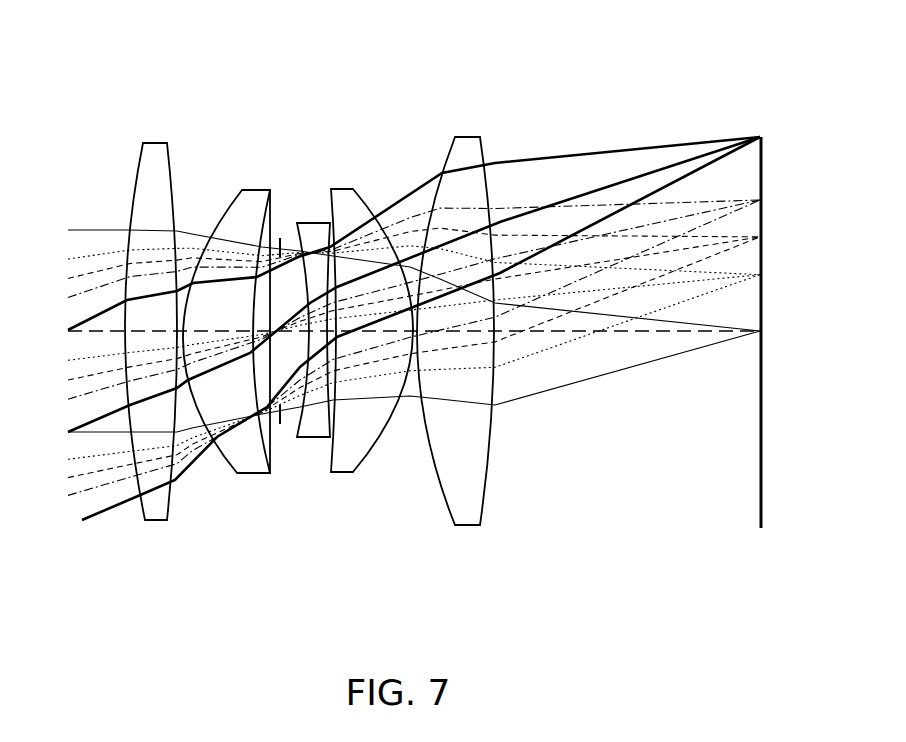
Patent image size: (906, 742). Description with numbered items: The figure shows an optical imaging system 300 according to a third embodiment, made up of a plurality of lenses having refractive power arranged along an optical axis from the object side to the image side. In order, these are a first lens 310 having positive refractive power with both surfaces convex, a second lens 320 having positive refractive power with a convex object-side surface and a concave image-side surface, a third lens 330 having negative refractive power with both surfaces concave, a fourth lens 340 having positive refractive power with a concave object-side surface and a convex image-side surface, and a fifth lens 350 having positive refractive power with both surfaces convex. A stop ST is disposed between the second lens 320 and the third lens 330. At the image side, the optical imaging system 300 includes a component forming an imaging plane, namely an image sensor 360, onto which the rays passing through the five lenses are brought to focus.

The optical imaging system 300 is at (367, 134).
The first lens 310 is at (148, 514).
The second lens 320 is at (237, 466).
The stop ST is at (290, 430).
The third lens 330 is at (313, 432).
The fourth lens 340 is at (357, 455).
The fifth lens 350 is at (463, 515).
The image sensor 360 is at (760, 488).